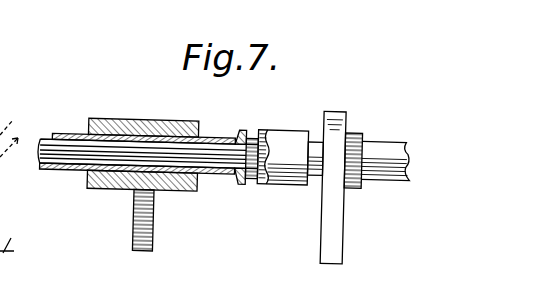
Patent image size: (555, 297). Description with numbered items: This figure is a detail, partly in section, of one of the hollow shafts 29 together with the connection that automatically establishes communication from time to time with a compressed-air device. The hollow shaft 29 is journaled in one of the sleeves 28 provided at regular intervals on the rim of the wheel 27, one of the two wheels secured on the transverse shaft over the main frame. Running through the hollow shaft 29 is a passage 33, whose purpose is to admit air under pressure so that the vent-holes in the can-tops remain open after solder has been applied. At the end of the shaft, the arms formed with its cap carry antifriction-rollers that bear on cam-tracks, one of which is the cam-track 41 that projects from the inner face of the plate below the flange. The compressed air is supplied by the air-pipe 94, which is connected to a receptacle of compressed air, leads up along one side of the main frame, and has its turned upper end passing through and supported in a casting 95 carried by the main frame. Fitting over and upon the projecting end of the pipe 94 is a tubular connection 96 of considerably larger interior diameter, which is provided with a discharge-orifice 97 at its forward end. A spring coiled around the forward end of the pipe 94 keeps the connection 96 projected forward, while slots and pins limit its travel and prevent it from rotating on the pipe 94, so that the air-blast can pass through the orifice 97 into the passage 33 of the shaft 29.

The wheel 27 is at (156, 233).
The sleeve 28 is at (123, 123).
The hollow shaft 29 is at (221, 110).
The passage 33 is at (48, 190).
The cam-track 41 is at (26, 119).
The air-pipe 94 is at (389, 158).
The casting 95 is at (336, 124).
The tubular connection 96 is at (276, 140).
The discharge-orifice 97 is at (244, 186).